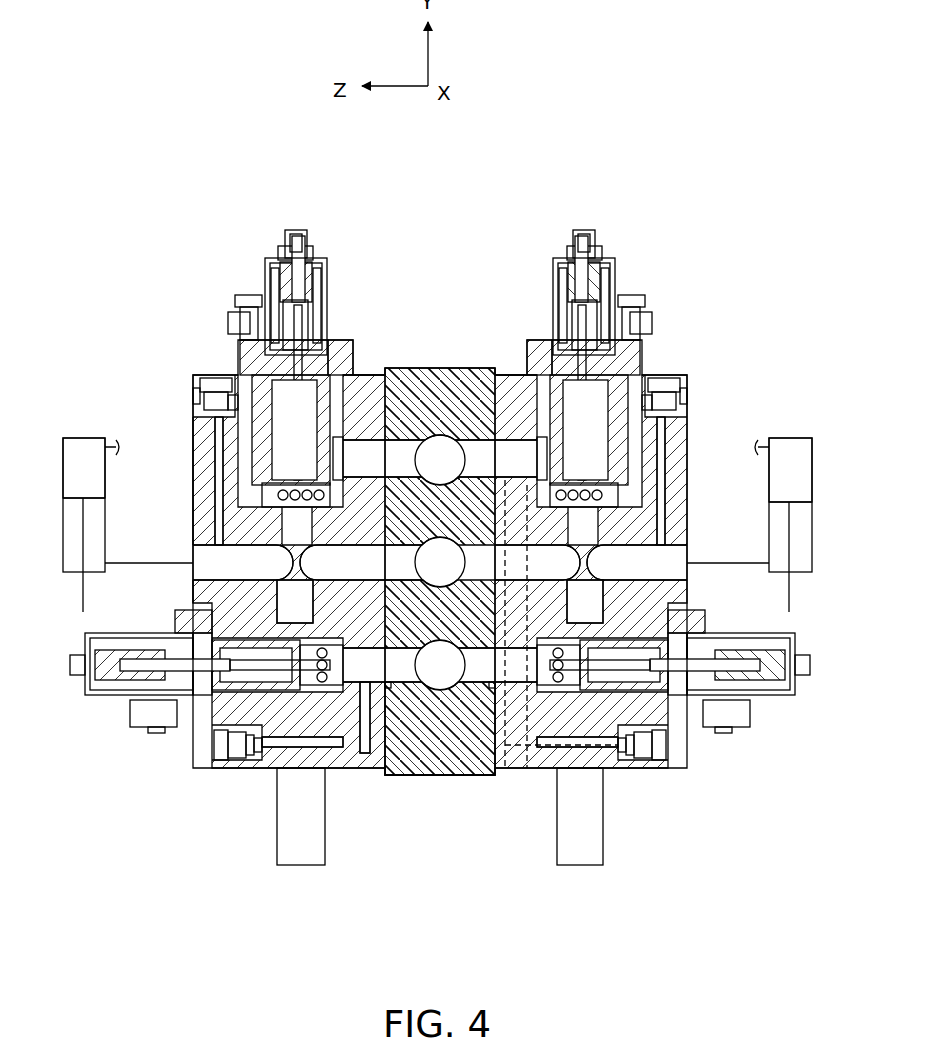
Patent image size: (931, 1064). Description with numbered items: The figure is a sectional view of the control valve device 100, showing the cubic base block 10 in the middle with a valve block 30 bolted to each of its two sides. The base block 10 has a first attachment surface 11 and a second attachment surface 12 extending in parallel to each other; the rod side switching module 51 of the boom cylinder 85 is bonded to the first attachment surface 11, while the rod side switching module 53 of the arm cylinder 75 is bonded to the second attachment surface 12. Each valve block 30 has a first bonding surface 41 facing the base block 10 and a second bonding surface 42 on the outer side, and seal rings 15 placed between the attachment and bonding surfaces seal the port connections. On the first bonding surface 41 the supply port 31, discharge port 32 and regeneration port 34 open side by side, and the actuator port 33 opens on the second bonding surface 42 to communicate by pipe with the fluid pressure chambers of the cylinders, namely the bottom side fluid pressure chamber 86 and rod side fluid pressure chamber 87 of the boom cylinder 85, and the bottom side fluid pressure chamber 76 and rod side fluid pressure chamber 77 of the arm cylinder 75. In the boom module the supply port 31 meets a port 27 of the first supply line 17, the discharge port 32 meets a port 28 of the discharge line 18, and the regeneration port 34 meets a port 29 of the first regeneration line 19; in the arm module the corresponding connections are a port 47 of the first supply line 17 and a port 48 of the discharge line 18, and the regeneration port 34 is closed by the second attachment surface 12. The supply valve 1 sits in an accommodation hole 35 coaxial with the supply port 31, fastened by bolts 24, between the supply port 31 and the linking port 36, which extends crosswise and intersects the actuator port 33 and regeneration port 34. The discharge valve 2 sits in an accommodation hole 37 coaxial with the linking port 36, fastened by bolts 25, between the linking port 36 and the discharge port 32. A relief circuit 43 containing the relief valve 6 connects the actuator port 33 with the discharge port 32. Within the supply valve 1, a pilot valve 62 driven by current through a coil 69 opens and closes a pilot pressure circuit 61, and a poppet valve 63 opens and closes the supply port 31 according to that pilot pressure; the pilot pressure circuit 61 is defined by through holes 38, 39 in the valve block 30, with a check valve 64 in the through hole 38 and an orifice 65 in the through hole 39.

The control valve device 100 is at (702, 205).
The base block 10 is at (440, 368).
The valve block 30 is at (200, 462).
The supply valve 1 is at (88, 692).
The discharge valve 2 is at (266, 282).
The relief valve 6 is at (325, 810).
The first attachment surface 11 is at (375, 753).
The second attachment surface 12 is at (499, 765).
The seal rings 15 is at (484, 700).
The first supply line 17 is at (427, 677).
The discharge line 18 is at (427, 472).
The first regeneration line 19 is at (427, 574).
The bolts 24 is at (180, 612).
The bolts 25 is at (342, 345).
The port 27 is at (387, 677).
The port 28 is at (387, 472).
The port 29 is at (387, 574).
The supply port 31 is at (350, 677).
The discharge port 32 is at (349, 472).
The actuator port 33 is at (233, 574).
The regeneration port 34 is at (324, 574).
The accommodation hole 35 is at (200, 640).
The linking port 36 is at (284, 612).
The accommodation hole 37 is at (333, 342).
The through hole 38 is at (219, 432).
The through hole 39 is at (235, 402).
The first bonding surface 41 is at (386, 690).
The second bonding surface 42 is at (193, 538).
The relief circuit 43 is at (548, 748).
The port 47 is at (468, 677).
The port 48 is at (468, 472).
The rod side switching module 51 is at (365, 373).
The rod side switching module 53 is at (515, 373).
The pilot pressure circuit 61 is at (216, 400).
The pilot valve 62 is at (322, 290).
The poppet valve 63 is at (262, 390).
The check valve 64 is at (198, 396).
The orifice 65 is at (214, 388).
The coil 69 is at (306, 240).
The arm cylinder 75 is at (789, 438).
The bottom side fluid pressure chamber 76 is at (769, 488).
The rod side fluid pressure chamber 77 is at (789, 520).
The boom cylinder 85 is at (83, 438).
The bottom side fluid pressure chamber 86 is at (105, 488).
The rod side fluid pressure chamber 87 is at (90, 515).